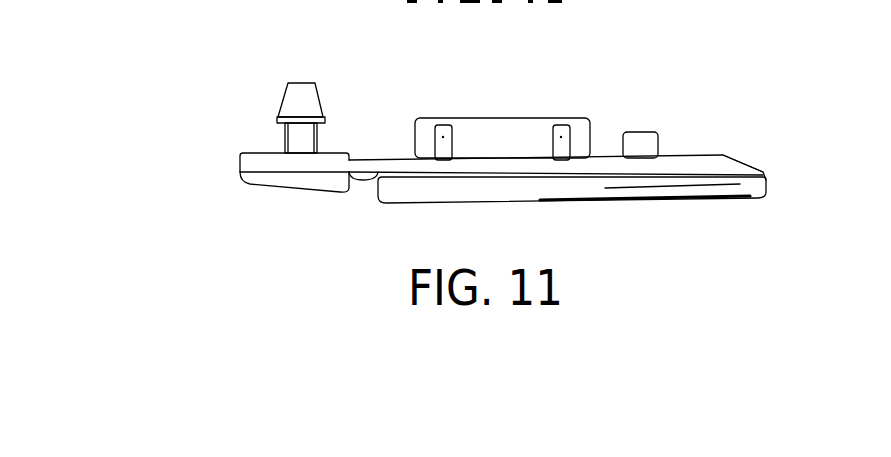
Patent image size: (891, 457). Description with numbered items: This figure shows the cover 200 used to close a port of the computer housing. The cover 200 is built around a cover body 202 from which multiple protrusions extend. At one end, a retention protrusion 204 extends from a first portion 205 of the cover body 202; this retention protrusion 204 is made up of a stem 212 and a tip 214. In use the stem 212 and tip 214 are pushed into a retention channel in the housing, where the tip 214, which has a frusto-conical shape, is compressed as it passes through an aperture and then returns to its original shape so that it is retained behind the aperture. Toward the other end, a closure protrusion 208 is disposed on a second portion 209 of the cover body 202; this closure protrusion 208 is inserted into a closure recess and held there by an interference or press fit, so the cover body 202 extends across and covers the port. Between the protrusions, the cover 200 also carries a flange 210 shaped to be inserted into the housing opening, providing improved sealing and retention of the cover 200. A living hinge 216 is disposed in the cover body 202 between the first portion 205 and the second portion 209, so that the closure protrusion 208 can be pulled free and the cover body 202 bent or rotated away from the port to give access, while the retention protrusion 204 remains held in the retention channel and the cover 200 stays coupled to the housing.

The cover 200 is at (216, 191).
The cover body 202 is at (577, 188).
The retention protrusion 204 is at (297, 138).
The first portion 205 is at (250, 180).
The closure protrusion 208 is at (643, 148).
The second portion 209 is at (738, 170).
The flange 210 is at (518, 128).
The stem 212 is at (303, 138).
The tip 214 is at (298, 103).
The living hinge 216 is at (362, 176).